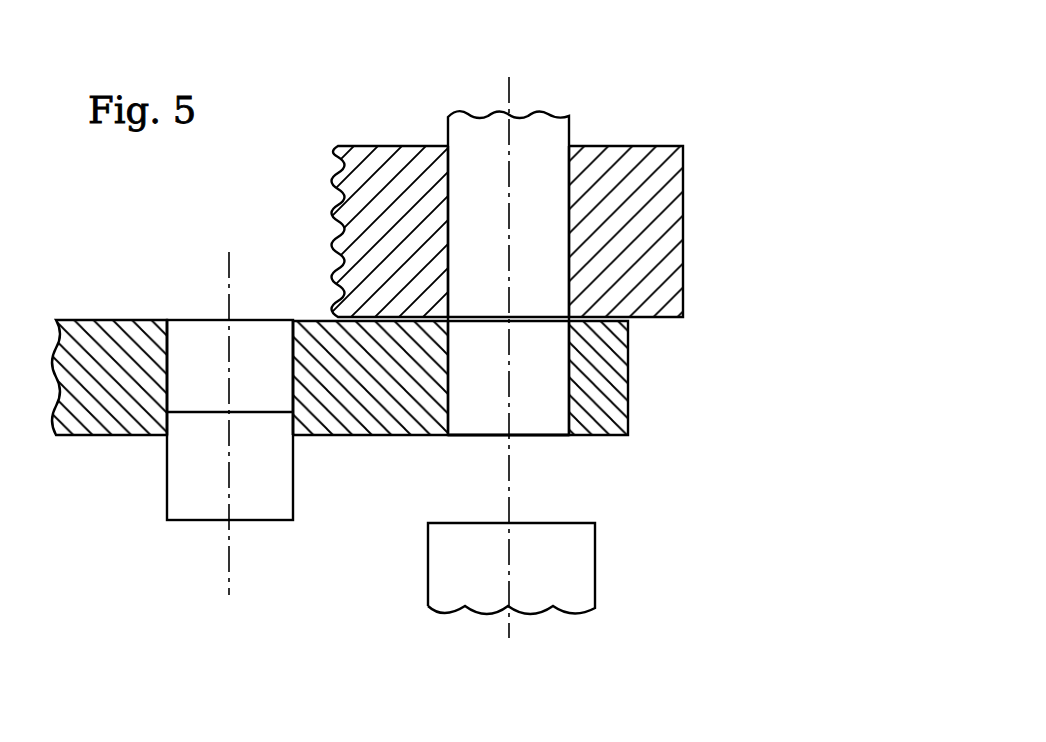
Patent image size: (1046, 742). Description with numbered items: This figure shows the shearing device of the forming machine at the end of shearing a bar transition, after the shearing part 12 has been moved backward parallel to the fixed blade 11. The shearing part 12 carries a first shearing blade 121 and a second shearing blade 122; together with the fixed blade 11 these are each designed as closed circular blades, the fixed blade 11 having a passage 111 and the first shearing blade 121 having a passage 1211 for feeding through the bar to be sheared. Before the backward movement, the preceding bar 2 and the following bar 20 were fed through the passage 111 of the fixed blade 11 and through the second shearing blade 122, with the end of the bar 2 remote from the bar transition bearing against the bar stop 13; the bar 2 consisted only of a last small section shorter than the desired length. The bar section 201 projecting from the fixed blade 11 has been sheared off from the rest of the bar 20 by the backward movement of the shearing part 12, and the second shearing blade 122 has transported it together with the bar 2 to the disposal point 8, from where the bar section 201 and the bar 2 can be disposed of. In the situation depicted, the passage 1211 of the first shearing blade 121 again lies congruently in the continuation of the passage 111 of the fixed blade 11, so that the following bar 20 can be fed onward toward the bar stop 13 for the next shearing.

The bar 2 is at (202, 480).
The disposal point 8 is at (142, 593).
The fixed blade 11 is at (657, 233).
The shearing part 12 is at (368, 487).
The bar stop 13 is at (577, 571).
The following bar 20 is at (543, 150).
The passage of the fixed blade 111 is at (447, 197).
The first shearing blade 121 is at (580, 371).
The second shearing blade 122 is at (152, 380).
The bar section 201 is at (192, 345).
The passage of the first shearing blade 1211 is at (538, 415).